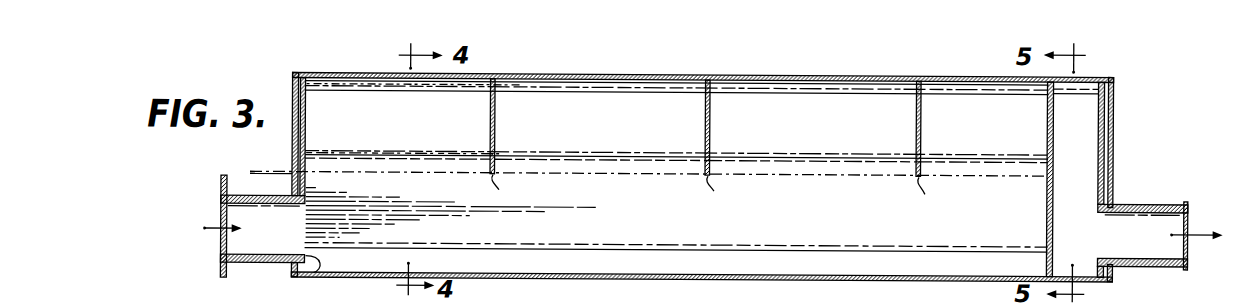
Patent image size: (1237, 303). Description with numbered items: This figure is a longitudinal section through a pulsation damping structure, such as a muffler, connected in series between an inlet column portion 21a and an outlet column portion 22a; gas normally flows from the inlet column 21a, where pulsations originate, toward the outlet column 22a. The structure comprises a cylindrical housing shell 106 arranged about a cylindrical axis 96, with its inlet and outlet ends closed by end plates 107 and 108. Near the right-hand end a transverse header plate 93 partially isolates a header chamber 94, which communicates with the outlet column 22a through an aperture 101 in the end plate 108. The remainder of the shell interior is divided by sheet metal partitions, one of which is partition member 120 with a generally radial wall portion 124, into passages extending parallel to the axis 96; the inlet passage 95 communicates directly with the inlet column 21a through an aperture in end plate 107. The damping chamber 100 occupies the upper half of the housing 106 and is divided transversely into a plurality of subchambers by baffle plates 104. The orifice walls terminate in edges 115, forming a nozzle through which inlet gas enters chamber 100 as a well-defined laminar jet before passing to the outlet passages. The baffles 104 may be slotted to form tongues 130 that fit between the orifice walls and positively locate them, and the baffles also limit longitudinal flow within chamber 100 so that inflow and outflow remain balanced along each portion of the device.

The inlet column portion 21a is at (243, 266).
The outlet column portion 22a is at (1146, 261).
The header plate 93 is at (1055, 125).
The header chamber 94 is at (1078, 191).
The inlet passage 95 is at (598, 272).
The cylindrical axis 96 is at (286, 172).
The damping chamber 100 is at (618, 91).
The aperture 101 is at (1143, 204).
The baffle plates 104 is at (497, 93).
The housing shell 106 is at (362, 77).
The end plate 107 is at (297, 94).
The end plate 108 is at (1105, 152).
The edges 115 is at (623, 164).
The partition member 120 is at (435, 151).
The radial wall portion 124 is at (652, 236).
The tongues 130 is at (723, 192).